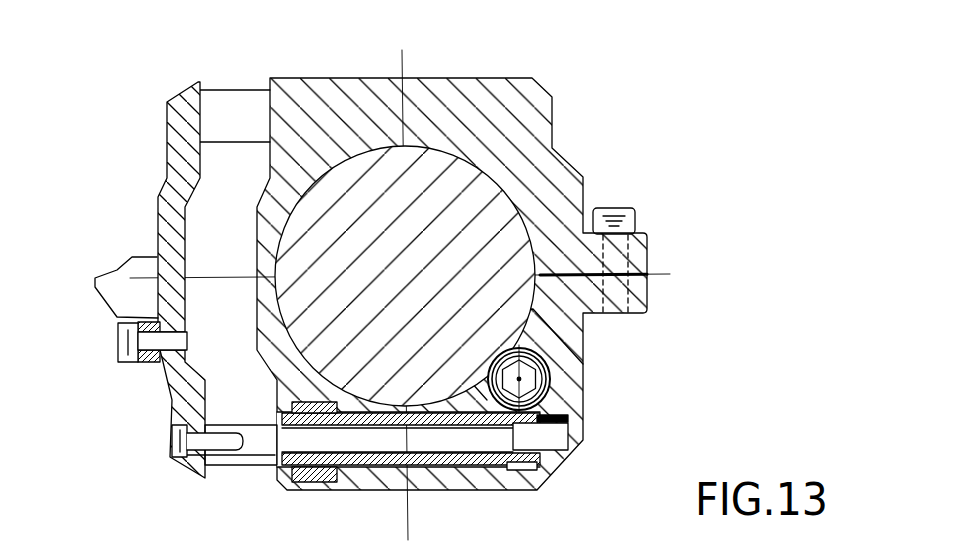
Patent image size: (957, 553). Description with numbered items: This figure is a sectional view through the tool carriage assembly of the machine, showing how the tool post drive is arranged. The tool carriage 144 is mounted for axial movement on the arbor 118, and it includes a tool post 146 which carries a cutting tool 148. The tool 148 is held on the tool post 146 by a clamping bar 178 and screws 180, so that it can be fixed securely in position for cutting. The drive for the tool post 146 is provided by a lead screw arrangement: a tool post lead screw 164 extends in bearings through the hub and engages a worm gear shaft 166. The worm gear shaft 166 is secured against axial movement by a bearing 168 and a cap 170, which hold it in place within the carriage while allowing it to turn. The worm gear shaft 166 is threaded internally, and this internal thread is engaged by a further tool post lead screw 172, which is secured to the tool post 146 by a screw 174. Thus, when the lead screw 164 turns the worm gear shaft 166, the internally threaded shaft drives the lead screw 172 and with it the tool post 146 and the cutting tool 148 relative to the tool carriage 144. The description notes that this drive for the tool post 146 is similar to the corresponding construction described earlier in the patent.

The arbor 118 is at (445, 172).
The tool carriage 144 is at (358, 94).
The tool post 146 is at (175, 148).
The cutting tool 148 is at (105, 287).
The tool post lead screw 164 is at (478, 379).
The worm gear shaft 166 is at (445, 465).
The bearing 168 is at (557, 464).
The cap 170 is at (310, 475).
The tool post lead screw 172 is at (260, 462).
The screw 174 is at (172, 437).
The clamping bar 178 is at (148, 362).
The screws 180 is at (123, 352).